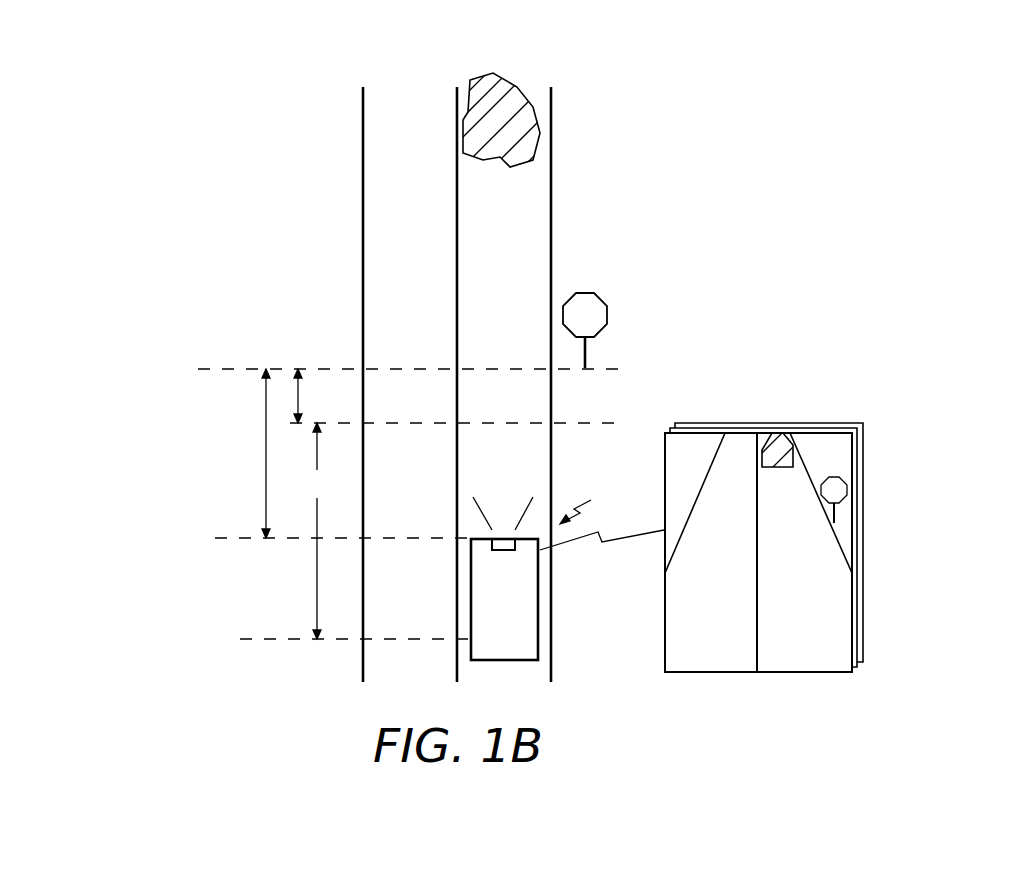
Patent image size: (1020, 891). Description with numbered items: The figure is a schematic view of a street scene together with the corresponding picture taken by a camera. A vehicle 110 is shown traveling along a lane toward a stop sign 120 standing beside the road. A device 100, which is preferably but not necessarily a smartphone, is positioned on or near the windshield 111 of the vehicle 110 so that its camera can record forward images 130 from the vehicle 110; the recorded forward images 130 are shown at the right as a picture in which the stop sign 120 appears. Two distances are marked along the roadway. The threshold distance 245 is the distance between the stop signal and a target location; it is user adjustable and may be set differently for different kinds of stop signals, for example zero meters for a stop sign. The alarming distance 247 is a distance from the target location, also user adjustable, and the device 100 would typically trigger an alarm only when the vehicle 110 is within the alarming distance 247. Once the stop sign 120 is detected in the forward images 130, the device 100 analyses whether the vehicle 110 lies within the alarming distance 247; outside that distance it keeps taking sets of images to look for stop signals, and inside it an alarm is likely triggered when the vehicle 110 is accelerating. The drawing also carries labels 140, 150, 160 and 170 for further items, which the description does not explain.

The device 100 is at (515, 547).
The vehicle 110 is at (515, 660).
The windshield 111 is at (485, 539).
The stop sign 120 is at (607, 317).
The forward images 130 is at (857, 398).
The obstacle in roadway 140 is at (508, 83).
The wireless signal 150 is at (580, 498).
The distance to obstacle 160 is at (243, 453).
The image transmission 170 is at (602, 549).
The threshold distance 245 is at (317, 396).
The alarming distance 247 is at (328, 531).